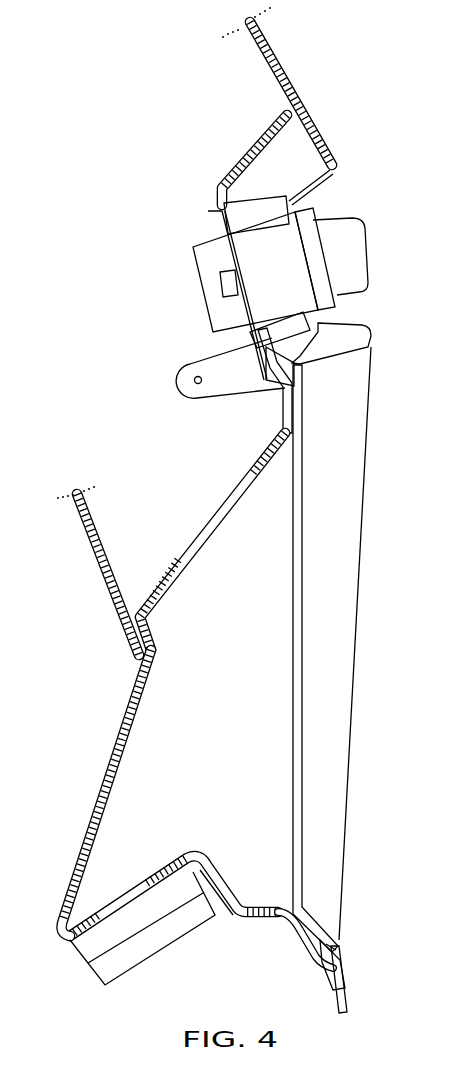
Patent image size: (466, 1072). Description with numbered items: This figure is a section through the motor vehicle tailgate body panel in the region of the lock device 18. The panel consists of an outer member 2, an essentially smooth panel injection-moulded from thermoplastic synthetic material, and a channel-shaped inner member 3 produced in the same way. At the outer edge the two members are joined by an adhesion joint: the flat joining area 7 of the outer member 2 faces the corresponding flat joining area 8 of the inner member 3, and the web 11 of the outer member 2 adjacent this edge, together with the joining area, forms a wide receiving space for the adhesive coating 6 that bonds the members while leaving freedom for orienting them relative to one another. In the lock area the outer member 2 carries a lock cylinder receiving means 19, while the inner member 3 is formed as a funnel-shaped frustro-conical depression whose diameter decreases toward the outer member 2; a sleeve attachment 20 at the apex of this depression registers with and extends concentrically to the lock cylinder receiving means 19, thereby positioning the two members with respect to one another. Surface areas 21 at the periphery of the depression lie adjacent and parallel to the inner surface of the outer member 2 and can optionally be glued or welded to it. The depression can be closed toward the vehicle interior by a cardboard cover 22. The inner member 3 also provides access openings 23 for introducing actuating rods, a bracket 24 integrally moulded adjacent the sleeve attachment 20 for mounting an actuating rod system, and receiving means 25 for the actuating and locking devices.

The outer member 2 is at (306, 633).
The inner member 3 is at (107, 769).
The adhesive coating 6 is at (345, 961).
The flat joining area 7 is at (350, 973).
The flat joining area 8 is at (328, 980).
The web 11 is at (331, 947).
The lock device 18 is at (370, 229).
The lock cylinder receiving means 19 is at (275, 316).
The sleeve attachment 20 is at (255, 199).
The surface areas 21 is at (268, 78).
The cardboard cover 22 is at (95, 534).
The access openings 23 is at (176, 558).
The bracket 24 is at (190, 373).
The receiving means 25 is at (97, 938).